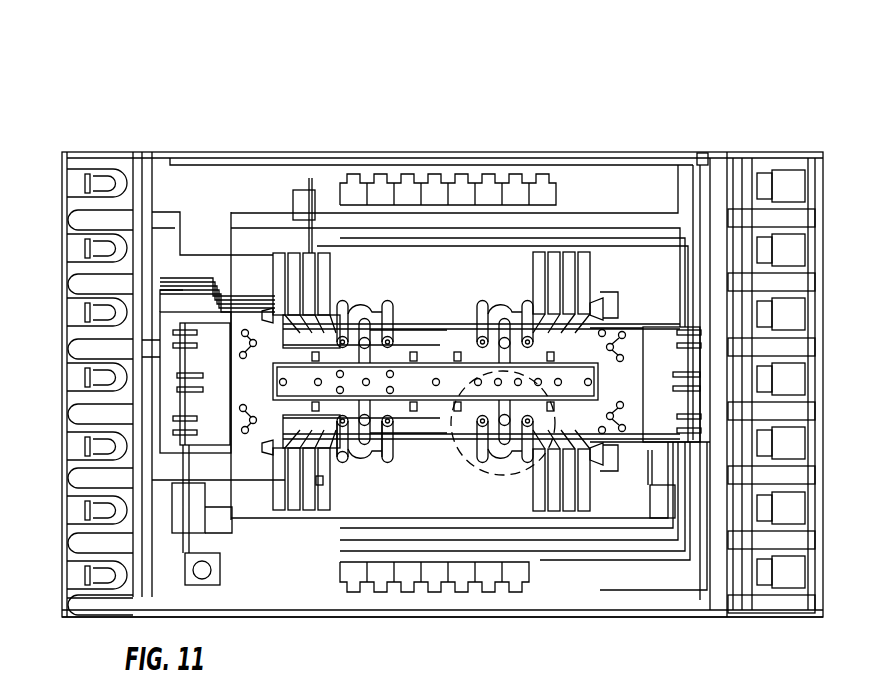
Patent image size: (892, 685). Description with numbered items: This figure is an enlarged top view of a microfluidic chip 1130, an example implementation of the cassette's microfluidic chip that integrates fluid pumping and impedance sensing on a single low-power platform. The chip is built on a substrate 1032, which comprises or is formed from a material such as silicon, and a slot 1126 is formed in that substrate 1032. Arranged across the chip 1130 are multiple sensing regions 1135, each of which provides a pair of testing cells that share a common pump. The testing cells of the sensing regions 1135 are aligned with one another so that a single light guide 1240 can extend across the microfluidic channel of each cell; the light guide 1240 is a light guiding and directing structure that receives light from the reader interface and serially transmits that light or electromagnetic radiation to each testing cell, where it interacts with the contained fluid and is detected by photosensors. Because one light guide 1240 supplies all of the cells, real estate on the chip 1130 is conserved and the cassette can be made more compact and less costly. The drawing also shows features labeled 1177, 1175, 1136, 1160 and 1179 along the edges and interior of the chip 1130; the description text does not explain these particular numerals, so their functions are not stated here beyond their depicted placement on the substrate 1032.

The microfluidic chip 1130 is at (713, 135).
The substrate 1032 is at (673, 617).
The edge contact fingers 1177 is at (88, 318).
The slot 1126 is at (287, 375).
The connector traces 1175 is at (415, 355).
The relay components 1136 is at (490, 345).
The pad 1160 is at (367, 423).
The light guide 1240 is at (615, 320).
The filter module 1179 is at (667, 338).
The sensing region 1135 is at (548, 463).